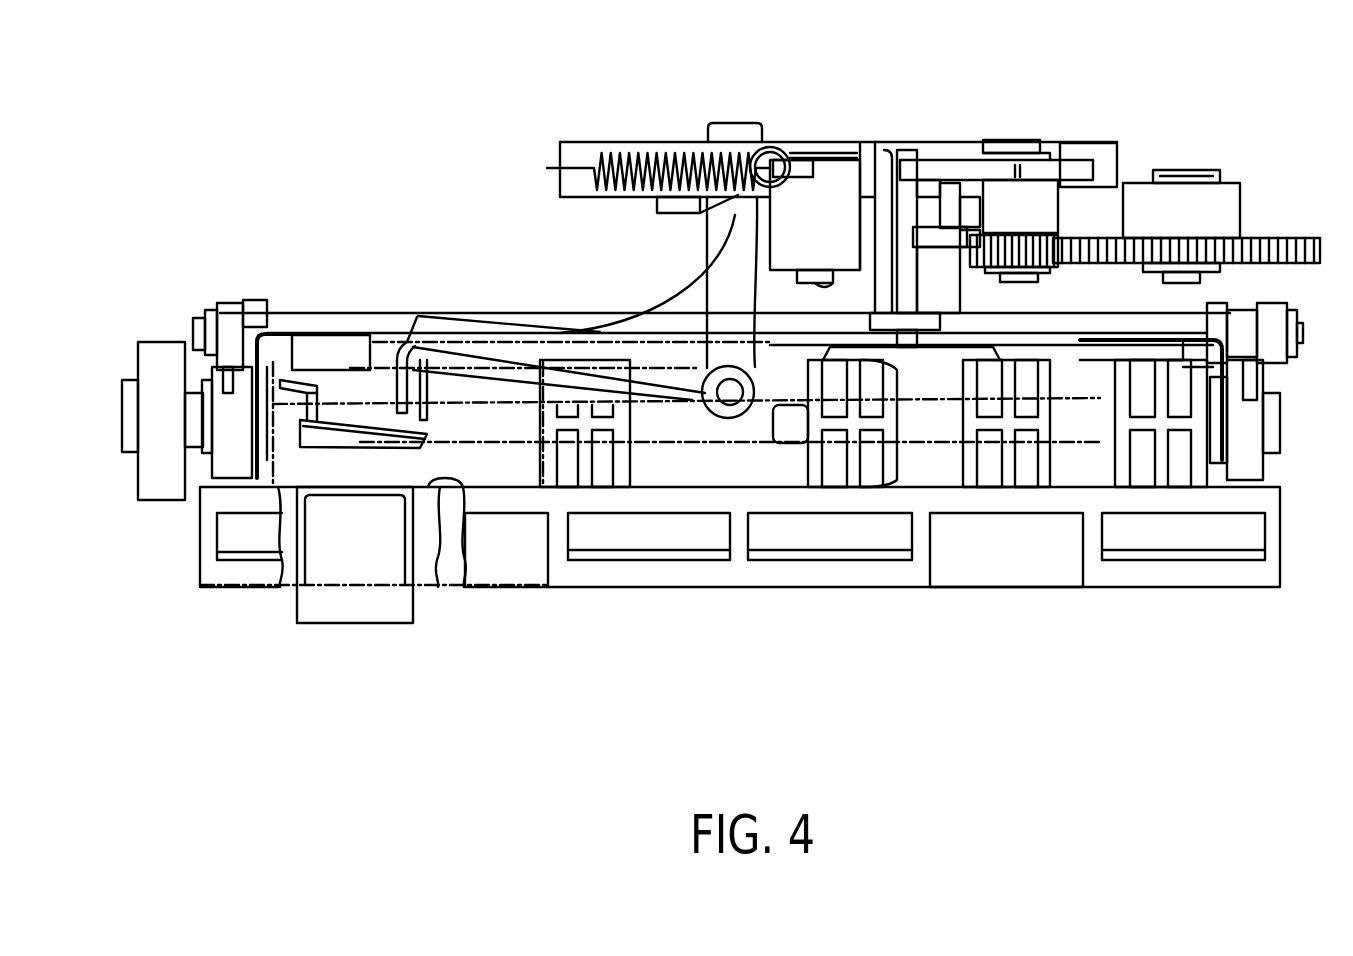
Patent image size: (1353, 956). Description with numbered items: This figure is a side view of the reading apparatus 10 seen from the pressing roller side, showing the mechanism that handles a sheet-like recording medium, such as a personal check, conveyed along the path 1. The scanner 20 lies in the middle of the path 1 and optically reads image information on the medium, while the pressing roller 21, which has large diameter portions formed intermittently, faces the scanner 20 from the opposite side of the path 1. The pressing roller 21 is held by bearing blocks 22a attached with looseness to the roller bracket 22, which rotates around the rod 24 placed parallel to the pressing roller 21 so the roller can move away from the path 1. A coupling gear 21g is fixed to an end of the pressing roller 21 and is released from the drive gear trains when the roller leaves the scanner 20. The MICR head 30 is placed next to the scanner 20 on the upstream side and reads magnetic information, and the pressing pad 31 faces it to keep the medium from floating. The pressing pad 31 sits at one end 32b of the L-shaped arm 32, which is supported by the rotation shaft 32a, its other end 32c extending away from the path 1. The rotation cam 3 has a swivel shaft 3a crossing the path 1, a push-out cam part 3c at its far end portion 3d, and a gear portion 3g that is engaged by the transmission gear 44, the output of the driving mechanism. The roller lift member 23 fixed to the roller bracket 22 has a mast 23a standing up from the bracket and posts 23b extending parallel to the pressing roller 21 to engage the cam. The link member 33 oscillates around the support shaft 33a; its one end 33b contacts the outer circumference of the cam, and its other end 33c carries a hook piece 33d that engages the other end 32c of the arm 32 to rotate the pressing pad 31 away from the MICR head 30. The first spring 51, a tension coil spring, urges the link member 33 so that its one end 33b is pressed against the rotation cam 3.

The path 1 is at (458, 527).
The rotation cam 3 is at (982, 126).
The swivel shaft 3a is at (1013, 143).
The push-out cam part 3c is at (905, 160).
The far end portion 3d is at (1067, 166).
The gear portion 3g is at (988, 262).
The reading apparatus 10 is at (519, 177).
The scanner 20 is at (859, 575).
The pressing roller 21 is at (972, 480).
The coupling gear 21g is at (160, 355).
The roller bracket 22 is at (548, 333).
The bearing blocks 22a is at (223, 465).
The roller lift member 23 is at (878, 255).
The mast 23a is at (878, 155).
The posts 23b is at (928, 183).
The rod 24 is at (355, 313).
The MICR head 30 is at (340, 624).
The pressing pad 31 is at (333, 423).
The arm 32 is at (493, 316).
The rotation shaft 32a is at (714, 410).
The one end of arm 32b is at (417, 317).
The other end of arm 32c is at (740, 125).
The link member 33 is at (792, 143).
The support shaft 33a is at (826, 284).
The one end of link member 33b is at (1110, 150).
The other end of link member 33c is at (578, 143).
The hook piece 33d is at (657, 205).
The transmission gear 44 is at (1302, 238).
The first spring 51 is at (657, 152).